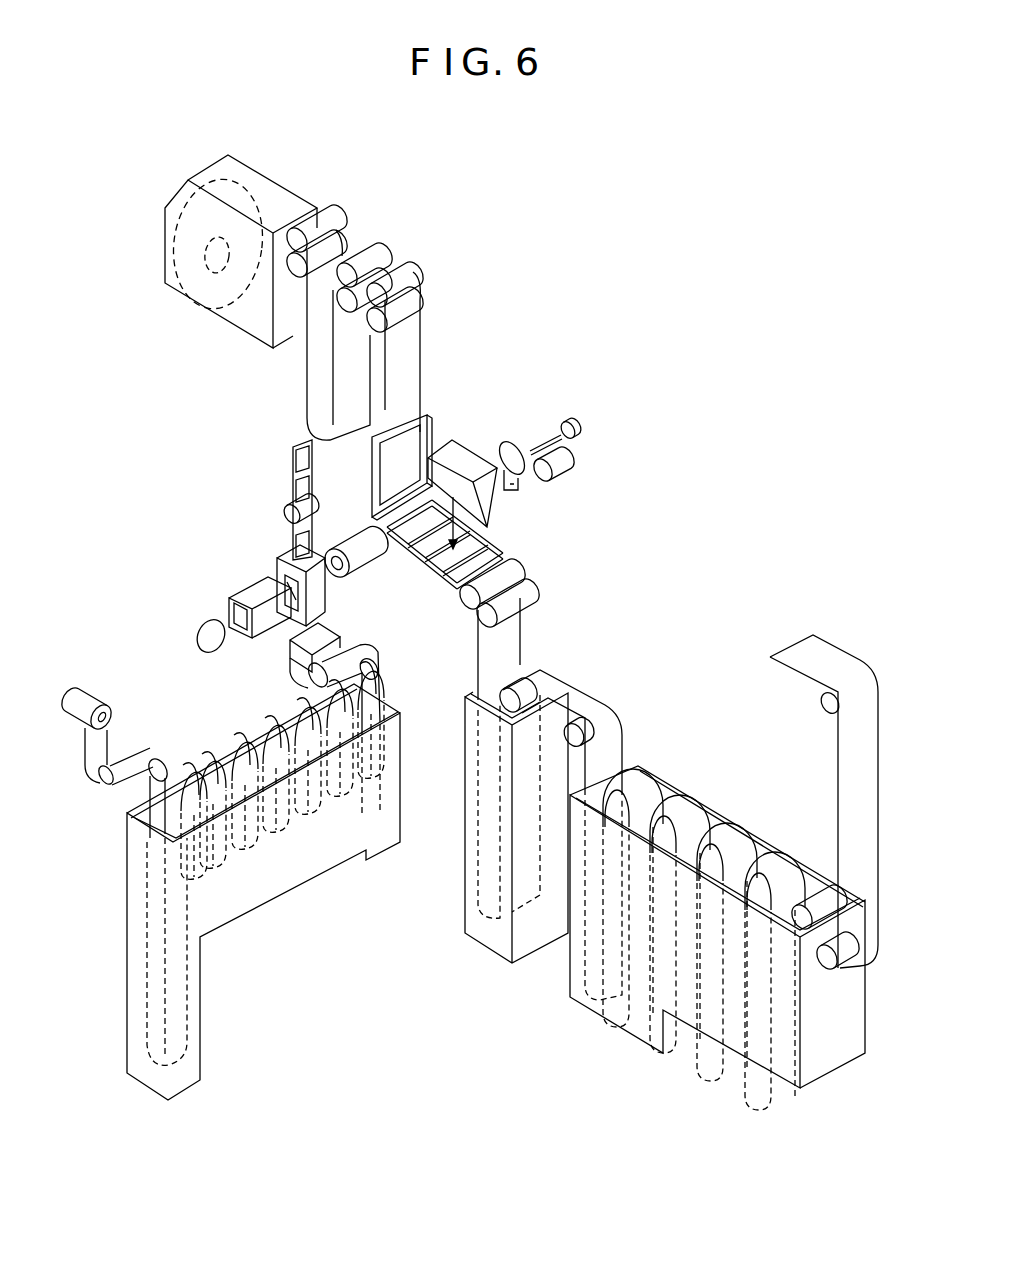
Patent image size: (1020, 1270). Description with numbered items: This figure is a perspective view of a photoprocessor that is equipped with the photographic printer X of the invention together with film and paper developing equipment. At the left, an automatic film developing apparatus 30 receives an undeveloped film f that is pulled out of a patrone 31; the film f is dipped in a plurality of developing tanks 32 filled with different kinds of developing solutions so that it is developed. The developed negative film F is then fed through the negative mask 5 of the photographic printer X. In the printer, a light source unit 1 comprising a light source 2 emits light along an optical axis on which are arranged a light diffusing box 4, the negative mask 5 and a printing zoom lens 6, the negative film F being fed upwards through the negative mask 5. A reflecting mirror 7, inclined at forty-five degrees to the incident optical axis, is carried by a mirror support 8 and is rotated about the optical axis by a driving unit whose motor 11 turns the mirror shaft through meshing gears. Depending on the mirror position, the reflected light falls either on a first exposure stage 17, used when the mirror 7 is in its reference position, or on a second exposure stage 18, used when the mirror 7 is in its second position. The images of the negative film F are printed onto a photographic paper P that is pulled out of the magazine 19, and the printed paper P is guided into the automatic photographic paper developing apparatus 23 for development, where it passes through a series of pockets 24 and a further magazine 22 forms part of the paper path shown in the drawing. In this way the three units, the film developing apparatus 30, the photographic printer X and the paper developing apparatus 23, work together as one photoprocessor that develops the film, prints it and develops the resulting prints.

The light source unit 1 is at (180, 631).
The light source 2 is at (202, 626).
The light diffusing box 4 is at (246, 590).
The negative mask 5 is at (275, 565).
The printing zoom lens 6 is at (356, 566).
The reflecting mirror 7 is at (503, 513).
The mirror support 8 is at (458, 455).
The motor 11 is at (584, 357).
The first exposure stage 17 is at (436, 578).
The second exposure stage 18 is at (370, 463).
The magazine 19 is at (268, 178).
The empty film magazine 22 is at (475, 955).
The automatic photographic paper developing apparatus 23 is at (694, 772).
The film pockets of receiving tray 24 is at (768, 848).
The automatic film developing apparatus 30 is at (290, 900).
The patrone 31 is at (88, 698).
The developing tanks 32 is at (263, 730).
The photographic paper P is at (413, 338).
The negative film F is at (380, 682).
The undeveloped film f is at (150, 752).
The photographic printer X is at (256, 513).